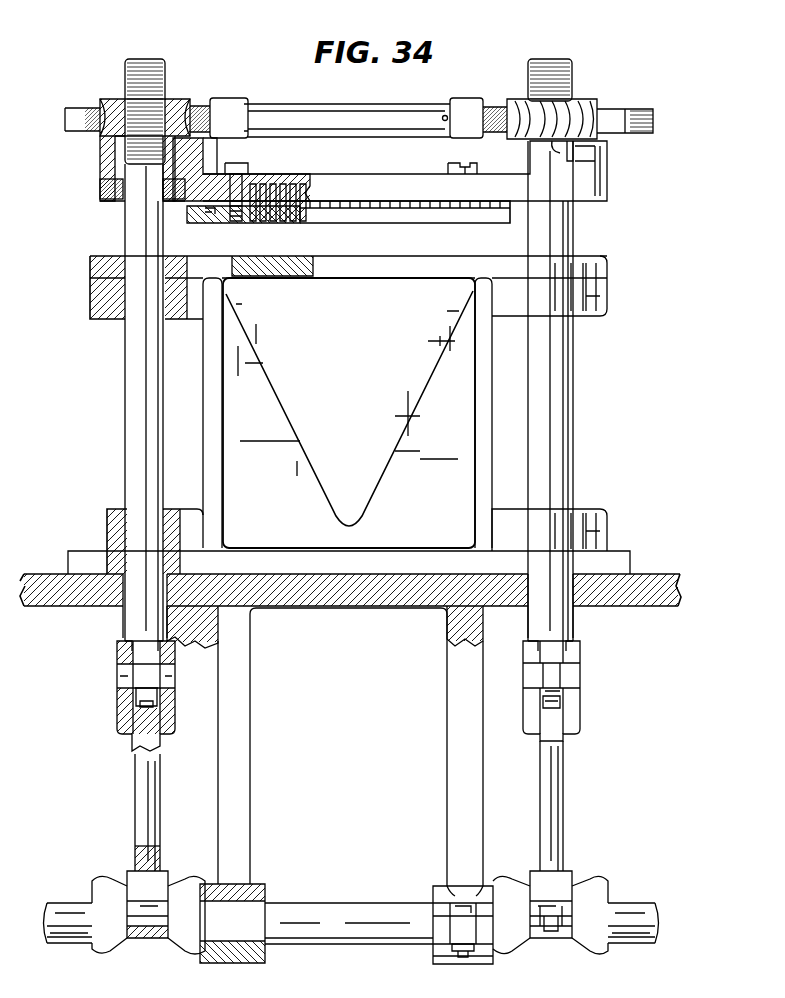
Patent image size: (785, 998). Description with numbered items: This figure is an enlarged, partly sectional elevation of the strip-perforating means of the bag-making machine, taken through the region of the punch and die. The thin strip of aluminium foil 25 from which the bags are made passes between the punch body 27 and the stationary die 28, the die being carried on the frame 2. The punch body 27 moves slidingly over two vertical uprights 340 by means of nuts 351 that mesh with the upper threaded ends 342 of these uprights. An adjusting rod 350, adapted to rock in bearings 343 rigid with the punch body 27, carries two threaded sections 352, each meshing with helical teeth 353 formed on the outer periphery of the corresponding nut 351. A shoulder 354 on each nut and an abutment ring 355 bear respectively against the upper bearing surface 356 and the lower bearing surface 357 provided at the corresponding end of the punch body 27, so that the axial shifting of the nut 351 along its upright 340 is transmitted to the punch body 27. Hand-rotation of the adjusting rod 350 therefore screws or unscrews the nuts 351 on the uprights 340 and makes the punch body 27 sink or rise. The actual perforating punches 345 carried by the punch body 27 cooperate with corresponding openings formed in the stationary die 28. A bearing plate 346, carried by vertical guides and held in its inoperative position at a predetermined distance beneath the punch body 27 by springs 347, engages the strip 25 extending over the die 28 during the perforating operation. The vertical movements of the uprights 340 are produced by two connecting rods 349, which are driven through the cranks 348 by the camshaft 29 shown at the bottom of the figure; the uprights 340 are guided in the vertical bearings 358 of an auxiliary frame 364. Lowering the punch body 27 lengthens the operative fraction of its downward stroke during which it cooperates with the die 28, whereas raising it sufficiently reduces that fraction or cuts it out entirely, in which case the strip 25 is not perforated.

The frame 2 is at (48, 580).
The strip of aluminium foil 25 is at (440, 258).
The punch body 27 is at (375, 185).
The stationary die 28 is at (303, 258).
The camshaft 29 is at (357, 912).
The vertical uprights 340 is at (135, 418).
The upper threaded ends 342 is at (140, 62).
The bearings 343 is at (230, 100).
The perforating punches 345 is at (285, 178).
The bearing plate 346 is at (387, 222).
The springs 347 is at (200, 222).
The cranks 348 is at (125, 885).
The connecting rods 349 is at (140, 782).
The adjusting rod 350 is at (365, 110).
The nuts 351 is at (175, 98).
The threaded sections 352 is at (82, 128).
The helical teeth 353 is at (103, 98).
The shoulder 354 is at (205, 146).
The abutment ring 355 is at (105, 190).
The upper bearing surface 356 is at (575, 150).
The lower bearing surface 357 is at (110, 172).
The vertical bearings 358 is at (122, 308).
The auxiliary frame 364 is at (508, 425).